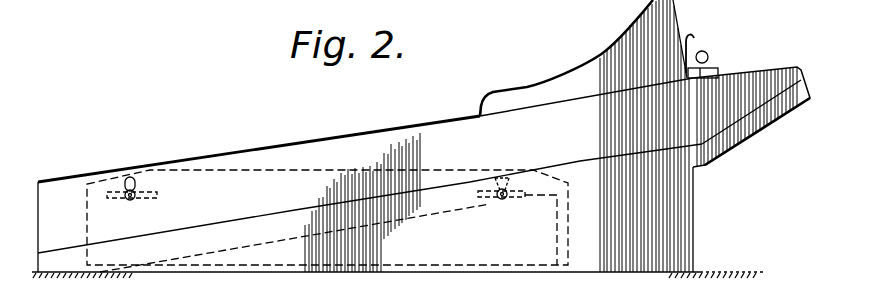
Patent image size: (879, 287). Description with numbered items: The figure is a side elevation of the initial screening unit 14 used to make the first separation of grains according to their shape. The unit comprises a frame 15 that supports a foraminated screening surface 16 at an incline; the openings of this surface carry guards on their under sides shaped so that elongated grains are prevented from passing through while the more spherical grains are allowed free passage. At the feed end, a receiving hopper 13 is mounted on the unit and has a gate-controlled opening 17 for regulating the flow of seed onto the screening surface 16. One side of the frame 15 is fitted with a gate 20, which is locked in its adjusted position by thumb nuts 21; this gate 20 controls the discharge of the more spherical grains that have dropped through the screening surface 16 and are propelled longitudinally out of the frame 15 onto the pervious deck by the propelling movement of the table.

The receiving hopper 13 is at (790, 75).
The initial screening unit 14 is at (370, 136).
The frame 15 is at (365, 130).
The foraminated screening surface 16 is at (709, 64).
The gate-controlled opening 17 is at (690, 46).
The gate 20 is at (561, 232).
The thumb nuts 21 is at (140, 200).